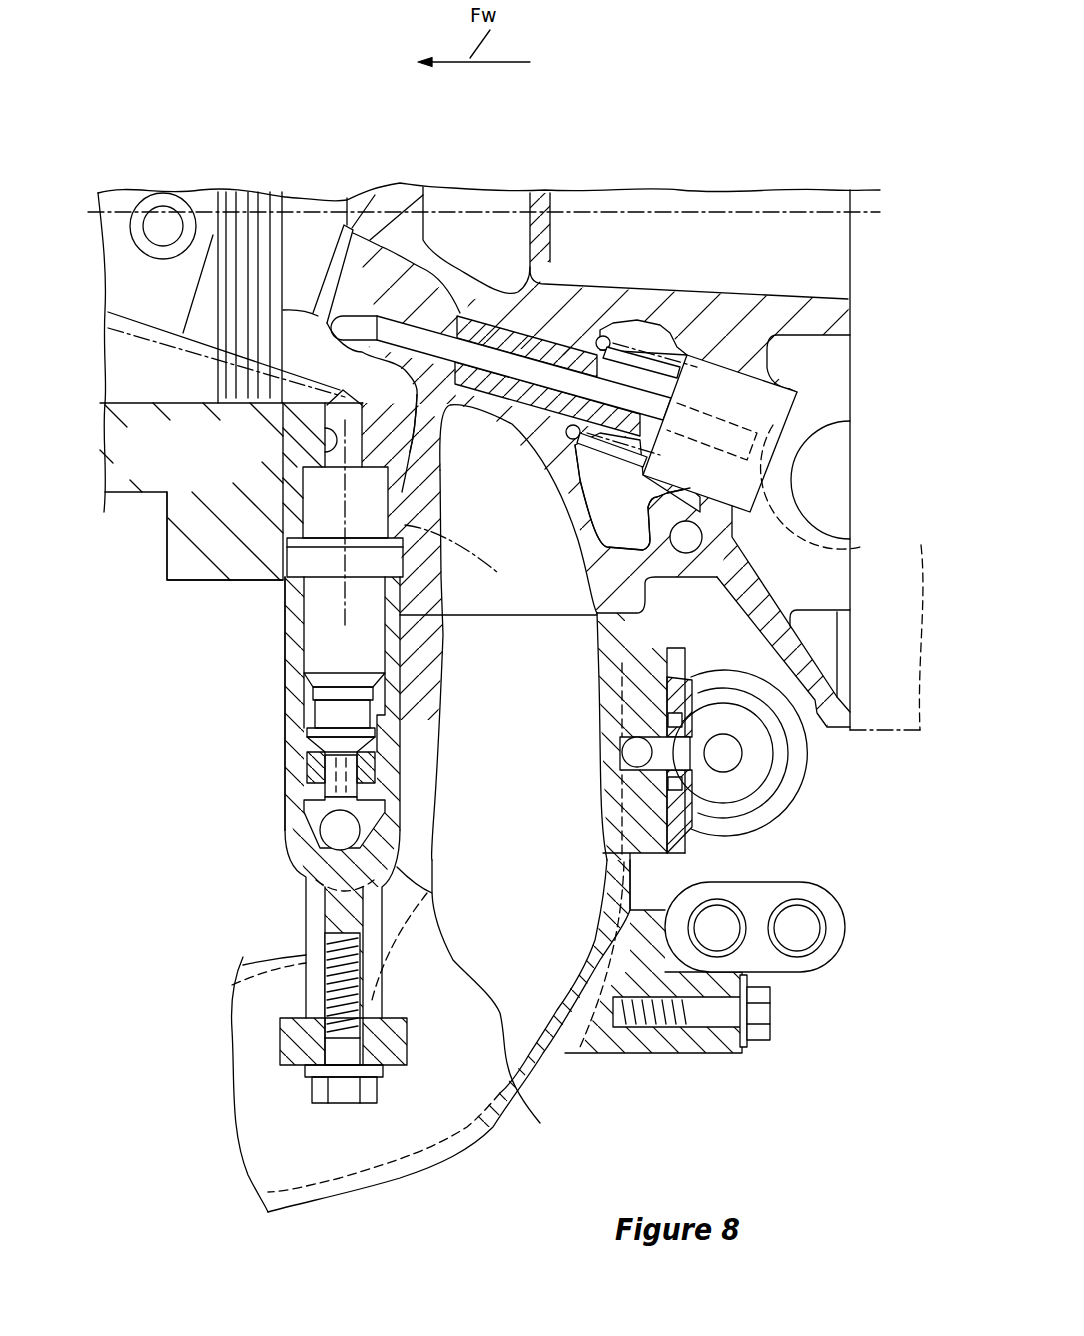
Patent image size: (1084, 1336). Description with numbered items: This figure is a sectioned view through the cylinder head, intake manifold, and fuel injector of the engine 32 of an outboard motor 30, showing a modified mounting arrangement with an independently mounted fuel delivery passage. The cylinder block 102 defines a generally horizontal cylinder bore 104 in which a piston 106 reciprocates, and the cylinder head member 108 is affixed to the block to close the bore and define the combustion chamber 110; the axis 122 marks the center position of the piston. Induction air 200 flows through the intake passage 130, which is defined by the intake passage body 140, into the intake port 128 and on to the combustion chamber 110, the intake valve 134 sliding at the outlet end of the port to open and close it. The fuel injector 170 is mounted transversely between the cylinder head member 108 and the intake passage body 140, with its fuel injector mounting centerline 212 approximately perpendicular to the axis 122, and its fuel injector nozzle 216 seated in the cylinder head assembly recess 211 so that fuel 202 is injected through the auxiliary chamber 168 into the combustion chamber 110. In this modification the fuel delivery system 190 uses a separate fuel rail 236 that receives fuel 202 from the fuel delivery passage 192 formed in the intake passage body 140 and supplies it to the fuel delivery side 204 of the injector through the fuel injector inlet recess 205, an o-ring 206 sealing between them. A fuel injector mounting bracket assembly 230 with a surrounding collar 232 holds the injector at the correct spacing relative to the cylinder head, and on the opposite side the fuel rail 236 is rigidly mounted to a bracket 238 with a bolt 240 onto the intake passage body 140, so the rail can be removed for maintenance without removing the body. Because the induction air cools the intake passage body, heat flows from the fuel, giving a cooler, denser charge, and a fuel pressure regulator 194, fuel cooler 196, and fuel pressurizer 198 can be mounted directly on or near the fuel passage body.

The outboard motor 30 is at (794, 98).
The engine 32 is at (822, 158).
The cylinder block 102 is at (180, 548).
The cylinder bore 104 is at (146, 405).
The piston 106 is at (155, 278).
The cylinder head member 108 is at (540, 205).
The combustion chamber 110 is at (302, 230).
The axis 122 is at (690, 212).
The intake port 128 is at (383, 272).
The intake passage 130 is at (415, 1115).
The intake valve 134 is at (413, 310).
The intake passage body 140 is at (657, 842).
The auxiliary chamber 168 is at (437, 410).
The fuel injector 170 is at (406, 642).
The fuel delivery system 190 is at (323, 776).
The fuel delivery passage 192 is at (640, 740).
The fuel pressure regulator 194 is at (797, 773).
The fuel cooler 196 is at (793, 975).
The fuel pressurizer 198 is at (832, 983).
The induction air 200 is at (520, 692).
The fuel 202 is at (212, 235).
The fuel delivery side 204 is at (357, 793).
The fuel injector inlet recess 205 is at (352, 825).
The o-ring 206 is at (373, 768).
The cylinder head assembly recess 211 is at (325, 452).
The fuel injector mounting centerline 212 is at (601, 452).
The fuel injector nozzle 216 is at (415, 425).
The fuel injector mounting bracket assembly 230 is at (271, 634).
The collar 232 is at (287, 690).
The fuel rail 236 is at (283, 830).
The bracket 238 is at (300, 1042).
The bolt 240 is at (317, 1090).